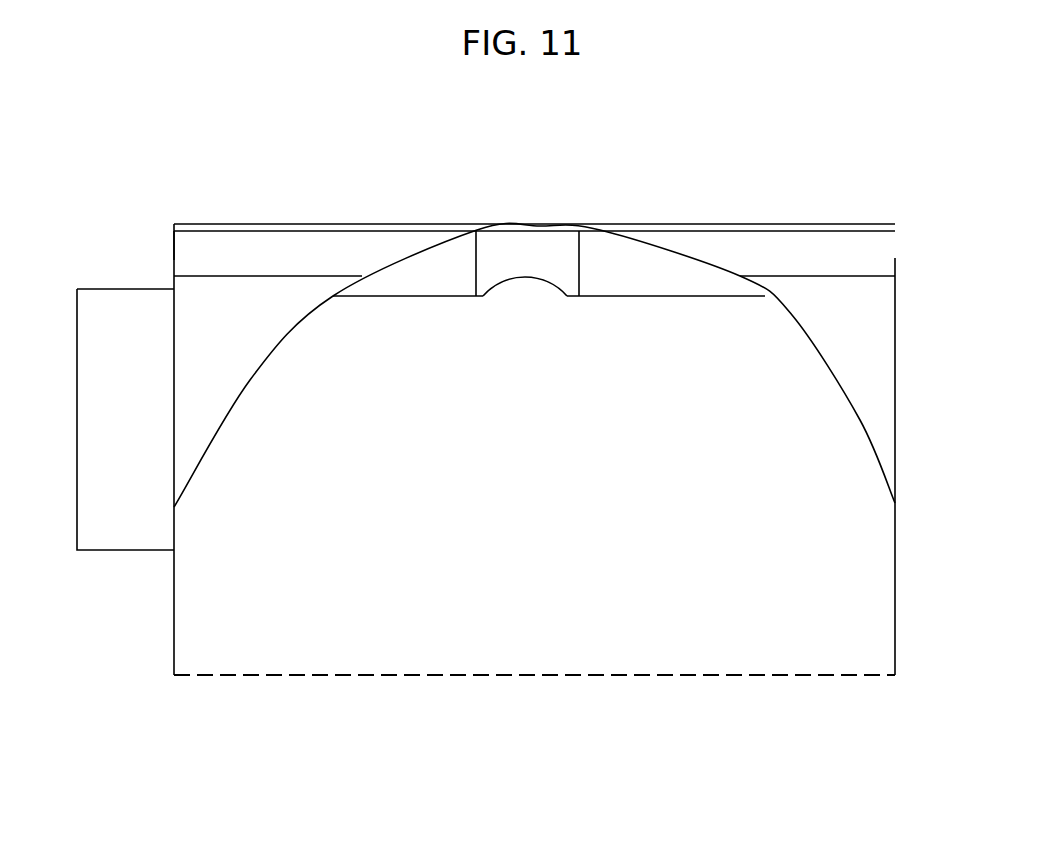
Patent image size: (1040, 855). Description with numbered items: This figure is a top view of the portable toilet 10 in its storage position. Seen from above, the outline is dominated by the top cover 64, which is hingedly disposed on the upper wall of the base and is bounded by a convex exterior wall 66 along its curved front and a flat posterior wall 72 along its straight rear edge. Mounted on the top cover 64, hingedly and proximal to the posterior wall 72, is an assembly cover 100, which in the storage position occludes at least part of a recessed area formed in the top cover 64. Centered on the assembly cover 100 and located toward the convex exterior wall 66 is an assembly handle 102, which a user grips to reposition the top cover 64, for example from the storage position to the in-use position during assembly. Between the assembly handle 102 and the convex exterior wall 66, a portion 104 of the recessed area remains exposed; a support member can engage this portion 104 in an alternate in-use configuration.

The portable toilet 10 is at (262, 203).
The top cover 64 is at (240, 370).
The convex exterior wall 66 is at (794, 315).
The flat posterior wall 72 is at (648, 676).
The assembly cover 100 is at (806, 529).
The assembly handle 102 is at (517, 277).
The portion of the second recessed area 104 is at (512, 238).